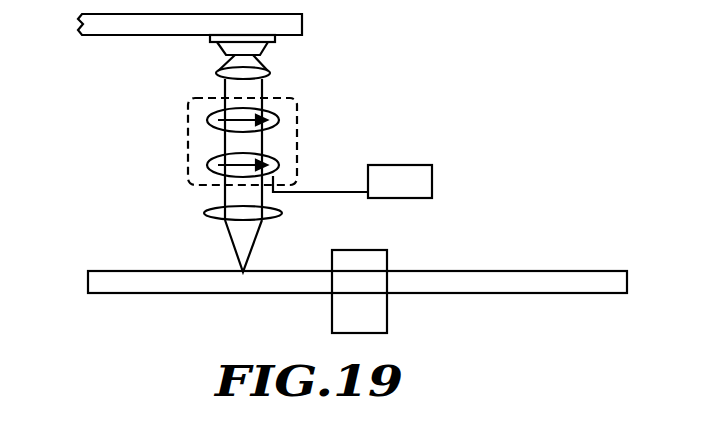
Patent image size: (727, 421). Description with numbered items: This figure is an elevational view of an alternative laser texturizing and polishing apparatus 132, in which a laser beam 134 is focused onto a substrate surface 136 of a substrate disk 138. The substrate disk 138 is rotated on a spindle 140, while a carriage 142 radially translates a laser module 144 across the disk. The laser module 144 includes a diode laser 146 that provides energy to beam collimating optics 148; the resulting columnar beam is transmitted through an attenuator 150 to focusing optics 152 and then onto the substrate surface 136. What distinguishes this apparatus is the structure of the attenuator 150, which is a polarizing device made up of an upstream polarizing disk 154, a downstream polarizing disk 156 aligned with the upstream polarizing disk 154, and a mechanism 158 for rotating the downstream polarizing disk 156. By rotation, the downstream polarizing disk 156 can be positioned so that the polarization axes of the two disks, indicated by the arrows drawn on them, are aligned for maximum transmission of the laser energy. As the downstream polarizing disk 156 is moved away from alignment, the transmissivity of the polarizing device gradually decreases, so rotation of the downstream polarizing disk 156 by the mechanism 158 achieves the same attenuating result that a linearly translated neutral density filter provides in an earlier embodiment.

The laser texturizing and polishing apparatus 132 is at (460, 106).
The laser beam 134 is at (233, 240).
The substrate surface 136 is at (535, 270).
The substrate disk 138 is at (556, 282).
The spindle 140 is at (345, 313).
The carriage 142 is at (294, 24).
The laser module 144 is at (100, 136).
The diode laser 146 is at (255, 47).
The beam collimating optics 148 is at (213, 72).
The attenuator 150 is at (297, 125).
The focusing optics 152 is at (283, 212).
The upstream polarizing disk 154 is at (210, 118).
The downstream polarizing disk 156 is at (210, 163).
The mechanism for rotating disk 158 is at (418, 186).